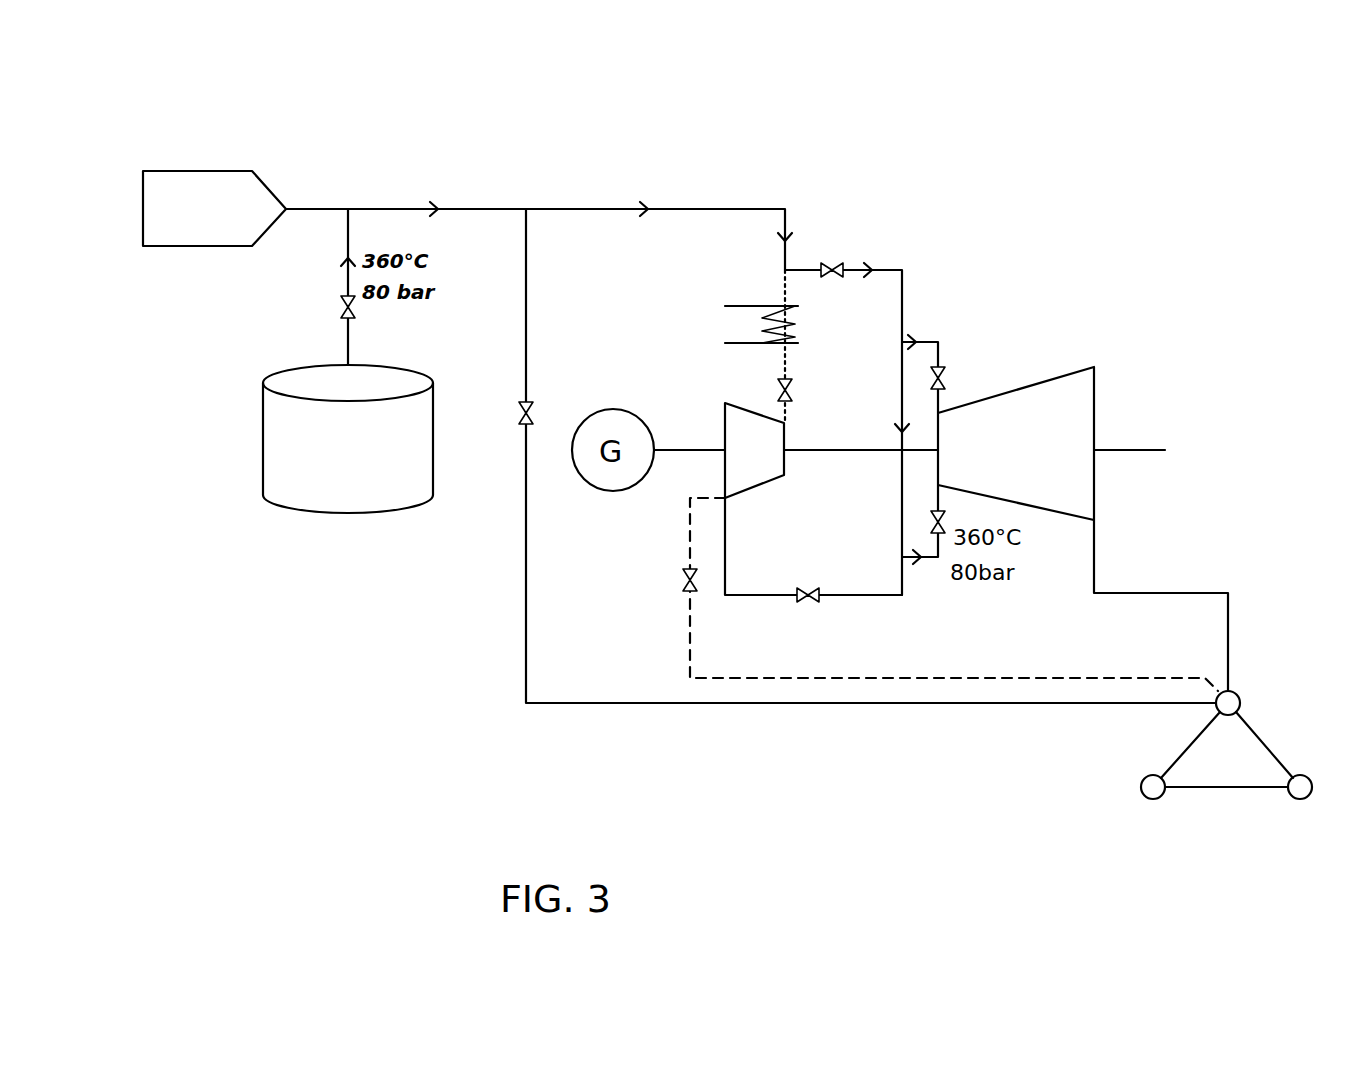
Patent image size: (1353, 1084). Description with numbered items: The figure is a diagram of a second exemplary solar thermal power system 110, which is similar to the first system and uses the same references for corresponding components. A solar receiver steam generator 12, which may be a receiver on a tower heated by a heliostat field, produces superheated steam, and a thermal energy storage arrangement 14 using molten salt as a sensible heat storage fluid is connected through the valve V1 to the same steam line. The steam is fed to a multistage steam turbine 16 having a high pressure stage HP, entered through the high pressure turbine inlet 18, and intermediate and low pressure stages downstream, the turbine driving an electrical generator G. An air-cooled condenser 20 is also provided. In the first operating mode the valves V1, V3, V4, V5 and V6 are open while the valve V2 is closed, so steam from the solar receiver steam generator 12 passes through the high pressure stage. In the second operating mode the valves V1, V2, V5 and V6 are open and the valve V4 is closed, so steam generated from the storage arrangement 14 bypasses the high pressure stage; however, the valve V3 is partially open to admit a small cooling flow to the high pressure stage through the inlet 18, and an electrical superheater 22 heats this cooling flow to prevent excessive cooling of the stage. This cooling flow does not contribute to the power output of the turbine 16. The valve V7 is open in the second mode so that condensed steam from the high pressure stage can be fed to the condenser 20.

The solar receiver steam generator 12 is at (200, 200).
The thermal energy storage arrangement 14 is at (336, 480).
The multistage steam turbine 16 is at (821, 473).
The high pressure turbine inlet 18 is at (799, 430).
The air-cooled condenser 20 is at (1224, 770).
The electrical superheater 22 is at (812, 330).
The solar thermal power system 110 is at (236, 736).
The valve V1 is at (328, 310).
The valve V2 is at (836, 256).
The valve V3 is at (800, 392).
The valve V4 is at (813, 615).
The valve V5 is at (961, 373).
The valve V6 is at (917, 527).
The valve V7 is at (668, 583).